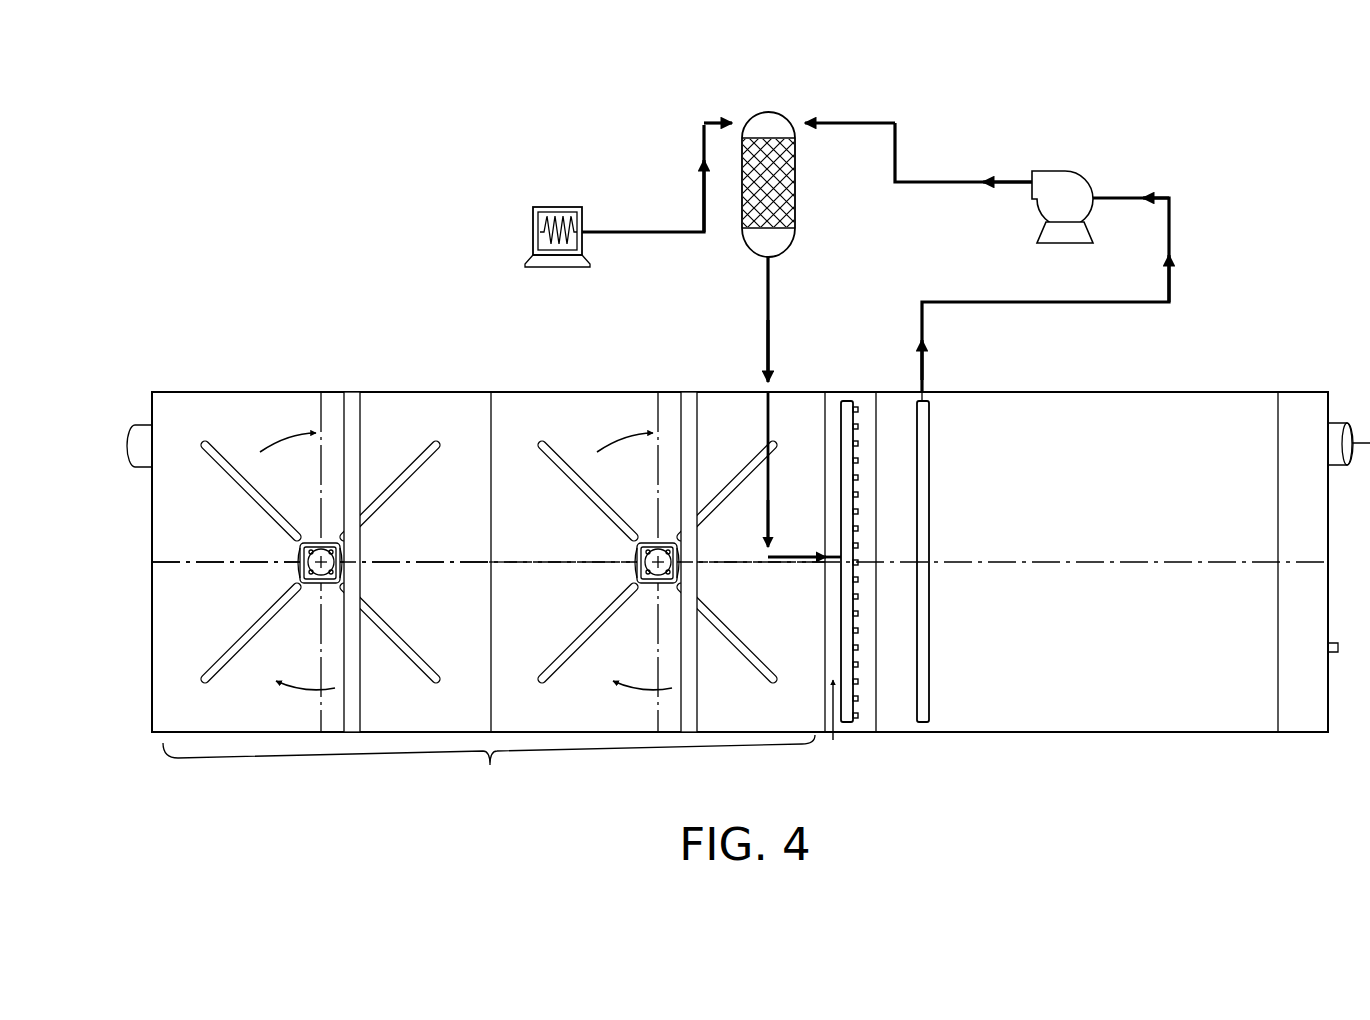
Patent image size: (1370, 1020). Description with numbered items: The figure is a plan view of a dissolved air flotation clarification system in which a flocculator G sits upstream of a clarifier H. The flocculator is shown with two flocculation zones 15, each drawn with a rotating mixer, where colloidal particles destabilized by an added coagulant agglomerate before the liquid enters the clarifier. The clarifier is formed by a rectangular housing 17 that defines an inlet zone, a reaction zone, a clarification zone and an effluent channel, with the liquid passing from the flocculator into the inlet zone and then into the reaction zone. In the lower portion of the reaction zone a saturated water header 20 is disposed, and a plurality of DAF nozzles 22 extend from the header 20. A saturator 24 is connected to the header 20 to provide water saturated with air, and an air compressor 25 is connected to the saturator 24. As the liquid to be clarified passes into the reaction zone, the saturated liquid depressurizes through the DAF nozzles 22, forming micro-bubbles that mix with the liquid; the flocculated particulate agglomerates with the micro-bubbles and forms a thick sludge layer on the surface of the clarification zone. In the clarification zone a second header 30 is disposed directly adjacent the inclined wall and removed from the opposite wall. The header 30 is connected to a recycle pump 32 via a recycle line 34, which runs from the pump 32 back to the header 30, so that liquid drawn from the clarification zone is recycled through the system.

The flocculation zones 15 is at (252, 405).
The housing 17 is at (1215, 392).
The saturated water header 20 is at (845, 402).
The DAF nozzles 22 is at (858, 443).
The saturator 24 is at (768, 112).
The air compressor 25 is at (533, 220).
The header 30 is at (930, 478).
The recycle pump 32 is at (1076, 170).
The recycle line 34 is at (1170, 222).